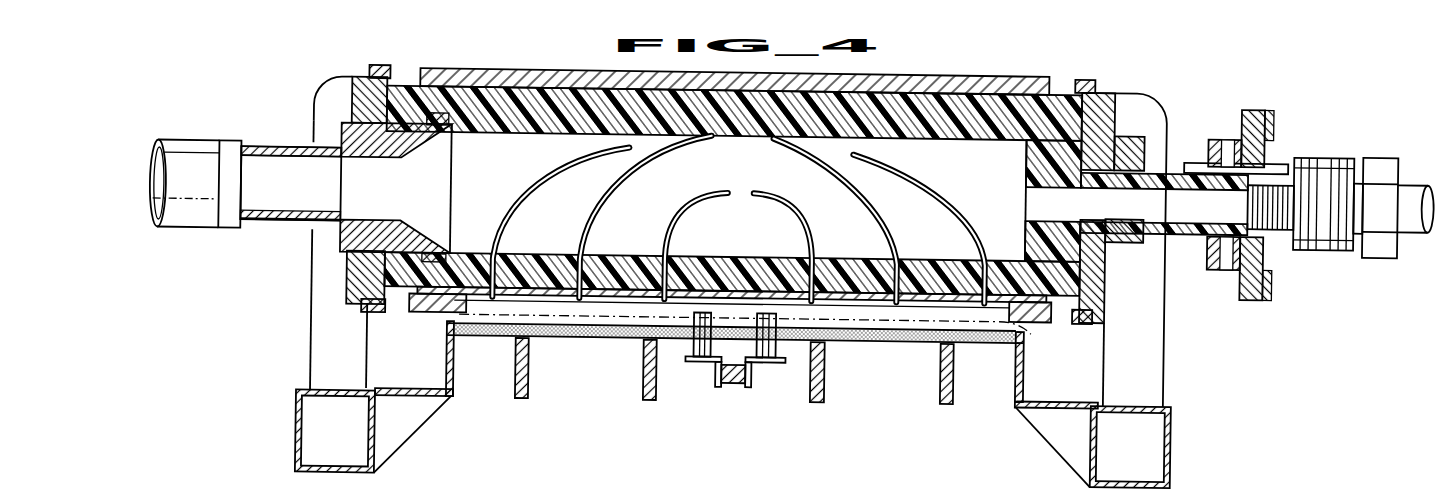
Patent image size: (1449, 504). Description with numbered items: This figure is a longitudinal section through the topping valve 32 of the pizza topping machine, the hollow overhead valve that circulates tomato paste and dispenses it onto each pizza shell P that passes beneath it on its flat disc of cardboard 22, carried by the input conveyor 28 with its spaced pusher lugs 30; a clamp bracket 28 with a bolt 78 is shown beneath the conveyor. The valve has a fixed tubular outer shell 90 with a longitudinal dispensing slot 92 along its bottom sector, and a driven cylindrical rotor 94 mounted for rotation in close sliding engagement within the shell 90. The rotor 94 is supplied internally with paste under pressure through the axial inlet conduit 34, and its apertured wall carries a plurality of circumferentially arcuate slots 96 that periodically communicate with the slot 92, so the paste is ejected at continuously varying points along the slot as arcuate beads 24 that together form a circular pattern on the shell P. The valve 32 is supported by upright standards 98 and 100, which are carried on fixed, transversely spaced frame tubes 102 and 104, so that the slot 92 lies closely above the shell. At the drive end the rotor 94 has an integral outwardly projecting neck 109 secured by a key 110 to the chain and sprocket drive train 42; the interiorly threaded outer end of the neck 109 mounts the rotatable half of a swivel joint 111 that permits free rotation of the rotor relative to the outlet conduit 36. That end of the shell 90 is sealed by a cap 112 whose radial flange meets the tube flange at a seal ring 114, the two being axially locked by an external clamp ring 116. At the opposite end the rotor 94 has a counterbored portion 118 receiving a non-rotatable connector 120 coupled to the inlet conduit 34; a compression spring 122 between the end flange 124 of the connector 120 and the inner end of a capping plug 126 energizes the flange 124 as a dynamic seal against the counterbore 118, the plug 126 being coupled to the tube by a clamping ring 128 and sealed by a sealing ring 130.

The topping valve 32 is at (252, 47).
The inlet conduit 34 is at (183, 147).
The outlet conduit 36 is at (1399, 176).
The chain and sprocket drive train 42 is at (1266, 108).
The flat disc of cardboard 22 is at (578, 342).
The arcuate beads 24 is at (1032, 332).
The input conveyor 28 is at (716, 390).
The pusher lugs 30 is at (700, 358).
The clamp bolt 78 is at (749, 386).
The pizza dough shell P is at (447, 332).
The tubular outer shell 90 is at (950, 74).
The longitudinal slot 92 is at (862, 262).
The cylindrical rotor 94 is at (555, 73).
The circumferentially arcuate slots 96 is at (517, 224).
The upright standard 98 is at (320, 318).
The upright standard 100 is at (1165, 331).
The frame tube 102 is at (298, 417).
The frame tube 104 is at (1173, 405).
The neck 109 is at (1183, 230).
The key 110 is at (1258, 162).
The swivel joint 111 is at (1326, 244).
The cap 112 is at (1108, 106).
The seal ring 114 is at (1100, 88).
The external clamp ring 116 is at (1083, 76).
The counterbored portion 118 is at (445, 259).
The non-rotatable connector 120 is at (340, 245).
The compression spring 122 is at (452, 137).
The end flange 124 is at (455, 130).
The capping plug 126 is at (350, 103).
The clamping ring 128 is at (378, 70).
The sealing ring 130 is at (352, 84).